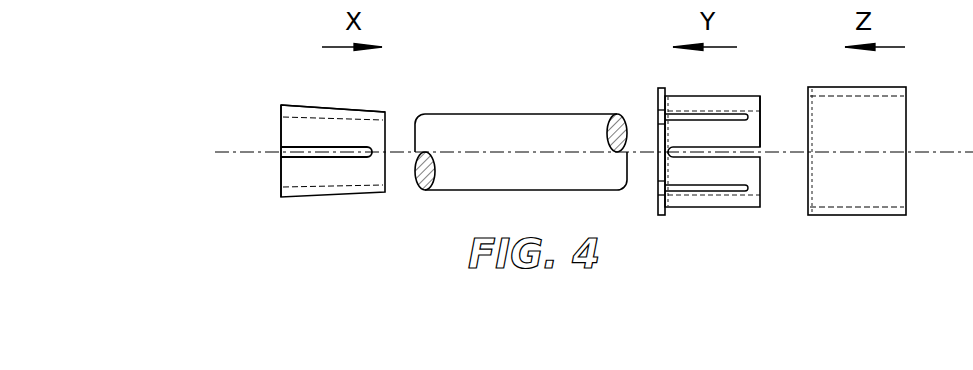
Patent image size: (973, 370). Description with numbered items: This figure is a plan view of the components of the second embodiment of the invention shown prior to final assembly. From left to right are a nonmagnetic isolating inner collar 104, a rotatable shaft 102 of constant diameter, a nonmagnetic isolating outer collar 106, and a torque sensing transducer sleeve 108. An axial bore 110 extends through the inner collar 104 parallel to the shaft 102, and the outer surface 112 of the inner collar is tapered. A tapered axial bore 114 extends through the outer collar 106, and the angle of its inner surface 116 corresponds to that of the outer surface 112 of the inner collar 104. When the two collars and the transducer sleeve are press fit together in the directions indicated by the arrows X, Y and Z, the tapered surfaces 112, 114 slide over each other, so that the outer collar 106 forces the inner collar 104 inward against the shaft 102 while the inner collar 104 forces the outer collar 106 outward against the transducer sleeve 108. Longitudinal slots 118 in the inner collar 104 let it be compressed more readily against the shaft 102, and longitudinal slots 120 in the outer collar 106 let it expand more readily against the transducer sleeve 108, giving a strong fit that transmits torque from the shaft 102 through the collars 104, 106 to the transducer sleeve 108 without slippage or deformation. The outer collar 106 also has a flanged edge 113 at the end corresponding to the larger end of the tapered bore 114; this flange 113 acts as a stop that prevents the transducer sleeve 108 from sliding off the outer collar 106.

The rotatable shaft 102 is at (443, 232).
The nonmagnetic isolating inner collar 104 is at (277, 240).
The nonmagnetic isolating outer collar 106 is at (697, 248).
The torque sensing transducer sleeve 108 is at (862, 253).
The axial bore 110 is at (280, 130).
The outer surface of the inner collar 112 is at (289, 106).
The flanged edge 113 is at (663, 88).
The tapered axial bore 114 is at (762, 120).
The inner surface of the outer collar 116 is at (753, 190).
The longitudinal slots in the inner collar 118 is at (345, 147).
The longitudinal slots in the outer collar 120 is at (702, 148).